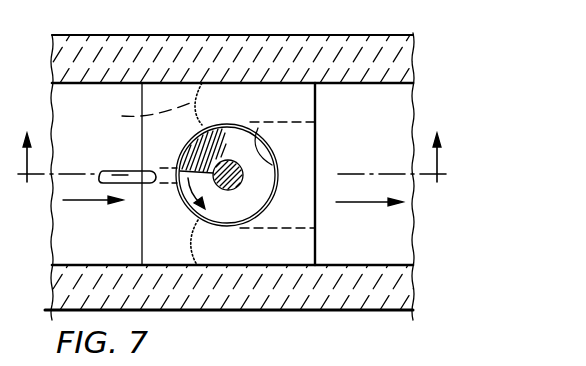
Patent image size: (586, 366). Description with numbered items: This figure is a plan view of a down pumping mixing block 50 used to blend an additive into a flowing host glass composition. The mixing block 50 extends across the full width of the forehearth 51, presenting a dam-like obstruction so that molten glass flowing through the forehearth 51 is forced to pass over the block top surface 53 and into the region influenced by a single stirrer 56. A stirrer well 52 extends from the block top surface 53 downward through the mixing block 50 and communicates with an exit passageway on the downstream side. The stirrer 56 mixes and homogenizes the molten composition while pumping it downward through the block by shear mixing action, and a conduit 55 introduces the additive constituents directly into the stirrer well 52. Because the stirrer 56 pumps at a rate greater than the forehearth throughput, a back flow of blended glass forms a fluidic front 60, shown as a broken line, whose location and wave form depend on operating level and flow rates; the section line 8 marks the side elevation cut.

The mixing block 50 is at (290, 260).
The forehearth 51 is at (157, 35).
The stirrer well 52 is at (272, 165).
The block top surface 53 is at (174, 234).
The conduit 55 is at (152, 171).
The stirrer 56 is at (205, 148).
The fluidic front 60 is at (147, 174).
The section line 8- 8 is at (231, 140).